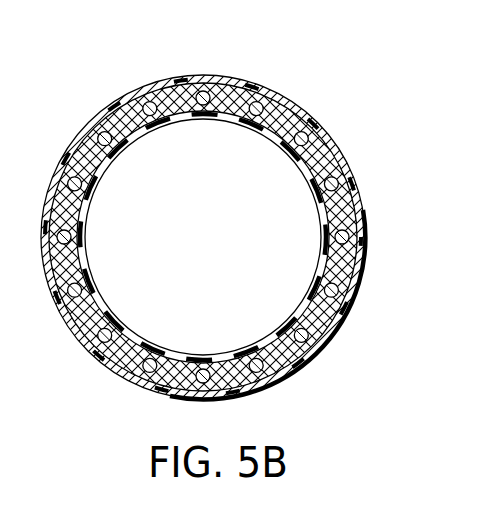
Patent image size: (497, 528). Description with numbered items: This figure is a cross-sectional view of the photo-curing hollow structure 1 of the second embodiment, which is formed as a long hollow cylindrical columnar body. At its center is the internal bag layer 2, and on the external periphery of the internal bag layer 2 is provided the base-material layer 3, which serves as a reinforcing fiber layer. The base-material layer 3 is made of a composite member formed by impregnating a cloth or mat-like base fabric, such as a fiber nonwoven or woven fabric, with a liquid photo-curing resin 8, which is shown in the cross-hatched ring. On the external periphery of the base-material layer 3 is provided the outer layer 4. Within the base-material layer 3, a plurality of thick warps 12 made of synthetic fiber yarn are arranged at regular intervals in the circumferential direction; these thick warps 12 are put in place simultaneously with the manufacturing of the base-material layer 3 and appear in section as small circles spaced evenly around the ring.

The photo-curing hollow structure 1 is at (323, 107).
The internal bag layer 2 is at (84, 206).
The base-material layer 3 is at (358, 202).
The outer layer 4 is at (213, 78).
The liquid photo-curing resin 8 is at (365, 266).
The thick warps 12 is at (107, 125).